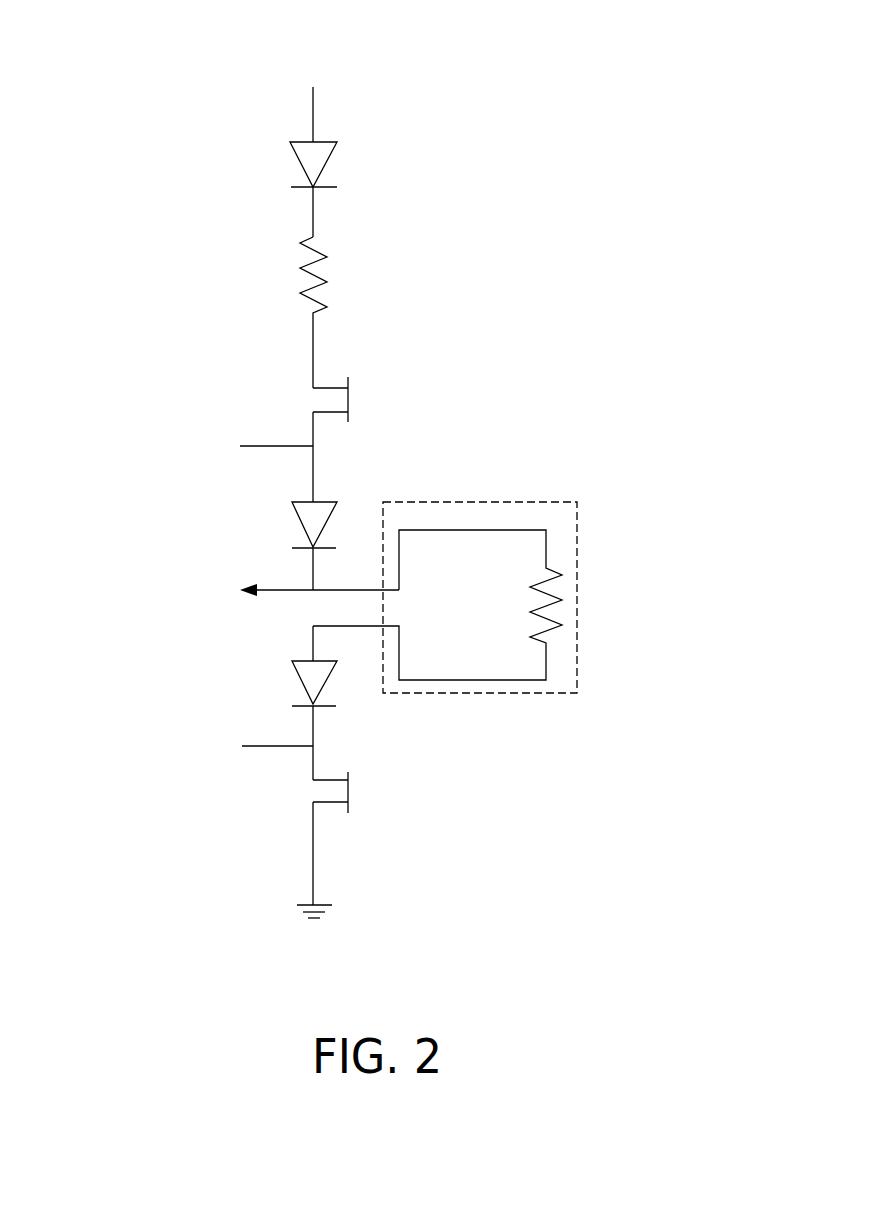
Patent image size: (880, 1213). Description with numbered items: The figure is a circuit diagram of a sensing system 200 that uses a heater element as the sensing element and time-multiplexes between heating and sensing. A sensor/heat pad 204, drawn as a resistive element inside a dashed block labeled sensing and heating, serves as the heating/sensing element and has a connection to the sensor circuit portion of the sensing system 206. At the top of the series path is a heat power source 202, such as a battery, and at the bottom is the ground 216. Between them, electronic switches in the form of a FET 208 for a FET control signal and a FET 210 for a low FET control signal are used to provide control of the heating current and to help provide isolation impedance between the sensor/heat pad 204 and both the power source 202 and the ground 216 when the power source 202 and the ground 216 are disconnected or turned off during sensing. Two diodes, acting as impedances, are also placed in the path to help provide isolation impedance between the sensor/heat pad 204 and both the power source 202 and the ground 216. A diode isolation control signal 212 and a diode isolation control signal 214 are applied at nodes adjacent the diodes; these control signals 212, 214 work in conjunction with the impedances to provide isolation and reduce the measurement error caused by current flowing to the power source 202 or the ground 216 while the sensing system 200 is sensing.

The sensing system 200 is at (178, 63).
The heat power source 202 is at (313, 99).
The sensor/heat pad 204 is at (548, 502).
The sensor circuit portion connection 206 is at (293, 590).
The FET 208 is at (351, 400).
The FET 210 is at (351, 792).
The diode isolation control signal 212 is at (250, 467).
The diode isolation control signal 214 is at (250, 756).
The ground 216 is at (340, 906).